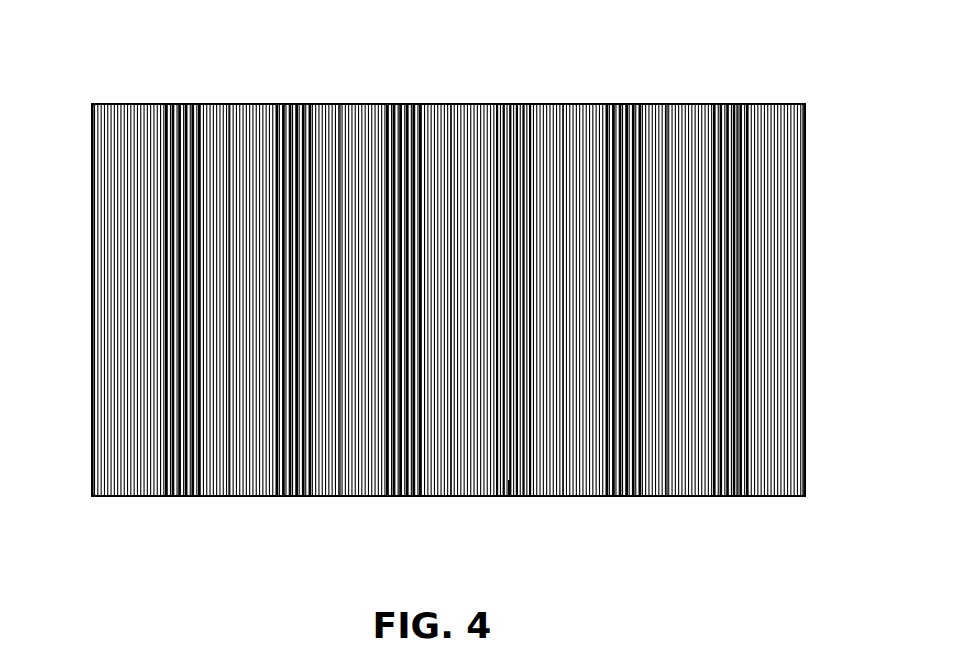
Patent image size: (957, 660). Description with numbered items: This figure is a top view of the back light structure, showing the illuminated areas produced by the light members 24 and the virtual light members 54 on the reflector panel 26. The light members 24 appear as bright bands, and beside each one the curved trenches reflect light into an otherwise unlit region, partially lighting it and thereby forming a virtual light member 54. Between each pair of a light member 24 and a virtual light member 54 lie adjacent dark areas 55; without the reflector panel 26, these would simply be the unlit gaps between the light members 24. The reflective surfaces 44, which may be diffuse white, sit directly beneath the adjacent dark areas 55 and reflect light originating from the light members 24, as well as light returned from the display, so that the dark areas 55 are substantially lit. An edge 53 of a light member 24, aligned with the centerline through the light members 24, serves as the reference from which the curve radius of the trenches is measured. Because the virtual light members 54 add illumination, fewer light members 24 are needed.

The light members 24 is at (162, 108).
The reflector panel 26 is at (806, 280).
The reflective surfaces 44 is at (118, 108).
The edge 53 is at (509, 490).
The virtual light members 54 is at (186, 496).
The adjacent dark areas 55 is at (229, 496).